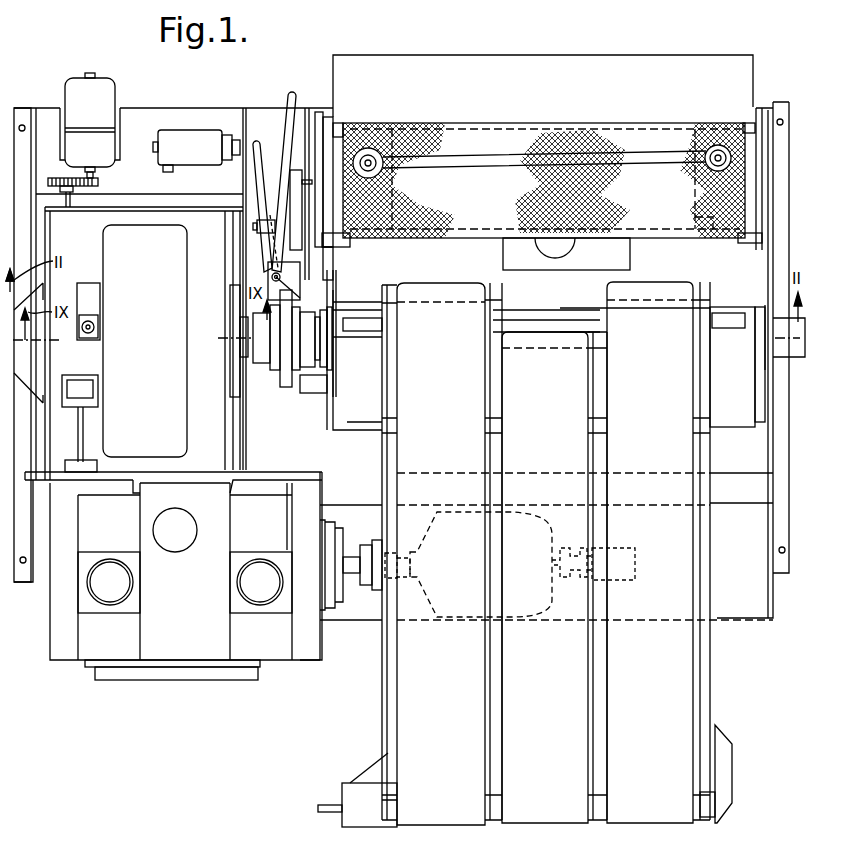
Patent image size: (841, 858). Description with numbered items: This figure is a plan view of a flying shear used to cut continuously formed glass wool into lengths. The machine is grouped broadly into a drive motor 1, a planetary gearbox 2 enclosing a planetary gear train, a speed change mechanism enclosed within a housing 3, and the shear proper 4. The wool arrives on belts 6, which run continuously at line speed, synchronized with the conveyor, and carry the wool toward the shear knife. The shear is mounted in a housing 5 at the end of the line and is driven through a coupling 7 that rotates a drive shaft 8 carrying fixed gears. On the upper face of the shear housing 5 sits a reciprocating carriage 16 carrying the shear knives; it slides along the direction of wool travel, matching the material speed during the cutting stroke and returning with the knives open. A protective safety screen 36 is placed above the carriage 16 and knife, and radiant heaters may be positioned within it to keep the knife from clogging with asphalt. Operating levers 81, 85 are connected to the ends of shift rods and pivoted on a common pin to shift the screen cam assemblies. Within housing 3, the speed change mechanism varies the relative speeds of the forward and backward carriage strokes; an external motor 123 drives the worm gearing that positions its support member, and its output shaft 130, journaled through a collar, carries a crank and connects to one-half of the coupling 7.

The drive motor 1 is at (425, 622).
The planetary gearbox 2 is at (62, 648).
The housing 3 is at (118, 214).
The shear proper 4 is at (444, 265).
The housing 5 is at (684, 60).
The belts 6 is at (455, 721).
The coupling 7 is at (283, 380).
The drive shaft 8 is at (320, 340).
The reciprocating carriage 16 is at (531, 258).
The protective safety screen 36 is at (566, 141).
The operating lever 81 is at (288, 95).
The operating lever 85 is at (272, 146).
The external motor 123 is at (108, 94).
The shaft 130 is at (250, 327).